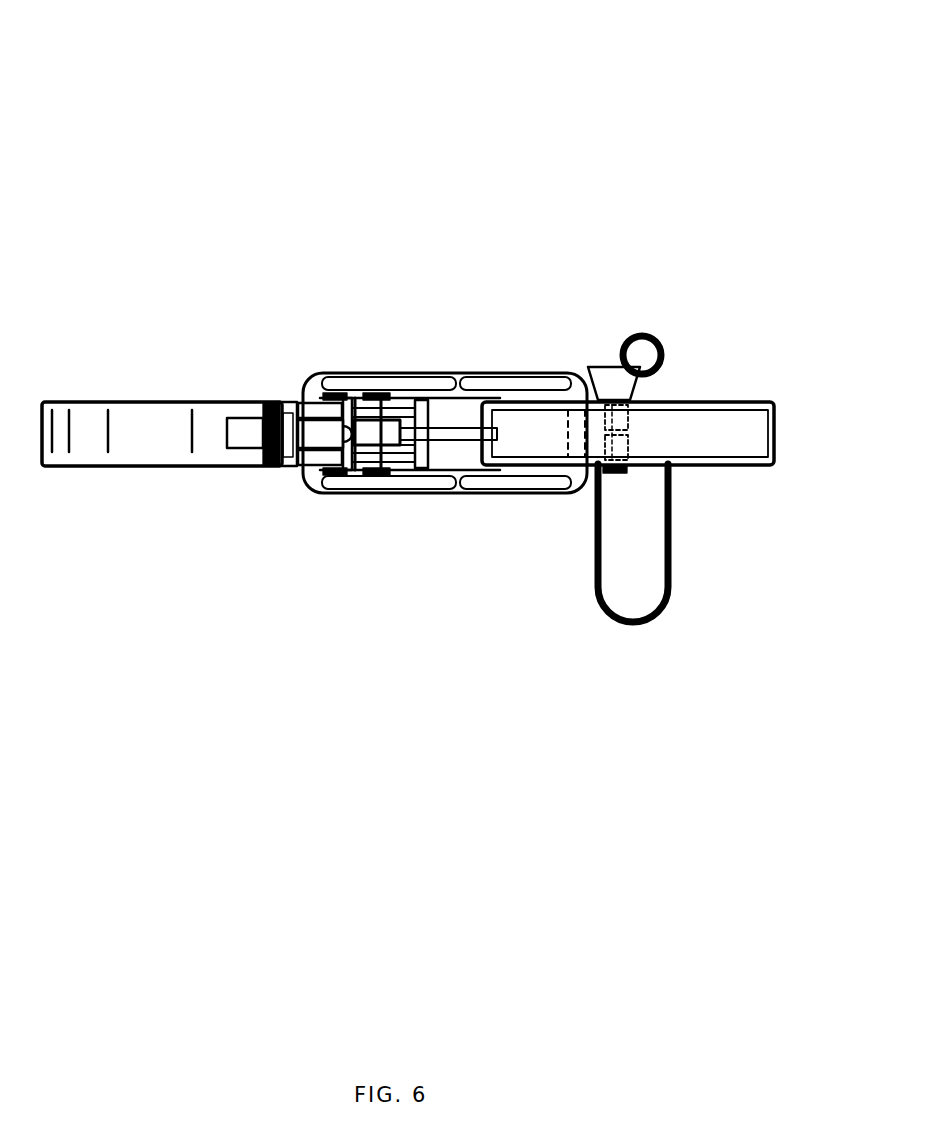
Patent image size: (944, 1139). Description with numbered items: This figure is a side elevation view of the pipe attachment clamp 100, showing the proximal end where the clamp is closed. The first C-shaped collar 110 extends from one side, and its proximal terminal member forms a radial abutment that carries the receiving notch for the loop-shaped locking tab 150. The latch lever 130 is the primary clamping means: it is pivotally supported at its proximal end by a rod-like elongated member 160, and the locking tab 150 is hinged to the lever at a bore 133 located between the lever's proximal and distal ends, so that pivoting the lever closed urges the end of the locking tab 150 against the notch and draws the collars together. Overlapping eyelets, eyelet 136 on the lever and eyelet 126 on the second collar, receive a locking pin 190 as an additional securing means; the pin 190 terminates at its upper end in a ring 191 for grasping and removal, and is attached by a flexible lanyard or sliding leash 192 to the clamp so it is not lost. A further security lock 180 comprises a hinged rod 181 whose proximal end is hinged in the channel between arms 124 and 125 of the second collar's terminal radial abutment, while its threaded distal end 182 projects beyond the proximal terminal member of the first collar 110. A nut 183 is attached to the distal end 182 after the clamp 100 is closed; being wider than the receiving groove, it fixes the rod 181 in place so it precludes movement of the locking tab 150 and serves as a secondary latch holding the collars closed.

The pipe attachment clamp 100 is at (127, 158).
The first C-shaped collar 110 is at (157, 420).
The arm of terminal radial abutment 124 is at (327, 423).
The arm of terminal radial abutment 125 is at (300, 458).
The eyelet 126 is at (627, 420).
The latch lever 130 is at (730, 402).
The bore 133 is at (575, 433).
The eyelet 136 is at (650, 466).
The locking tab 150 is at (428, 375).
The rod-like elongated member 160 is at (455, 435).
The security lock 180 is at (298, 592).
The hinged rod 181 is at (332, 436).
The threaded distal end of rod 182 is at (240, 440).
The nut 183 is at (268, 412).
The locking pin 190 is at (622, 430).
The ring 191 is at (640, 336).
The flexible lanyard or sliding leash 192 is at (633, 622).